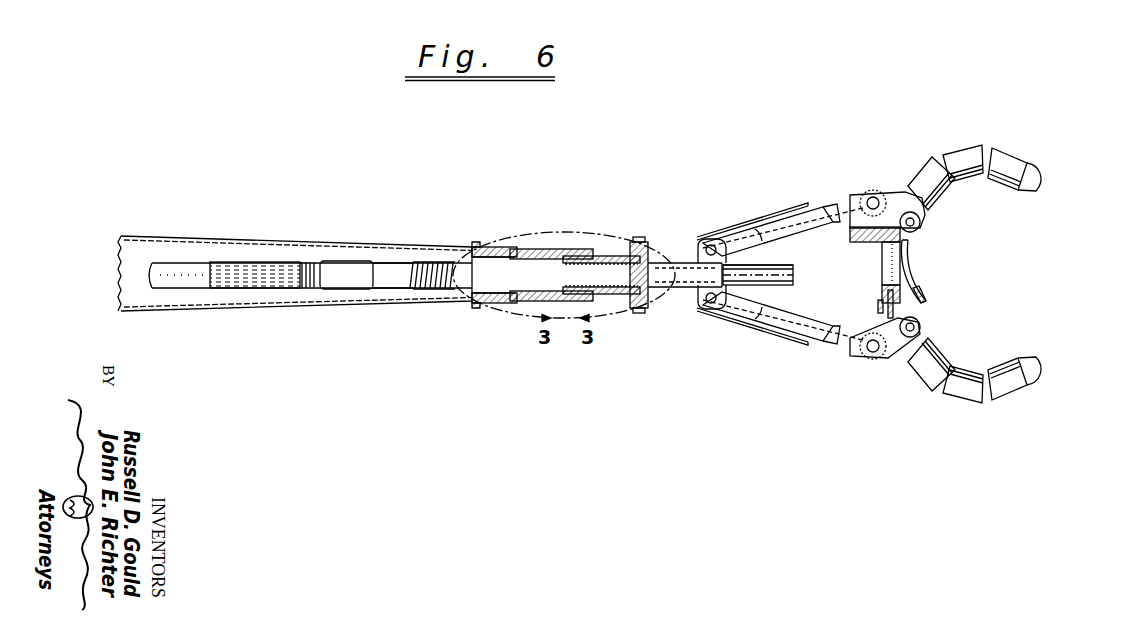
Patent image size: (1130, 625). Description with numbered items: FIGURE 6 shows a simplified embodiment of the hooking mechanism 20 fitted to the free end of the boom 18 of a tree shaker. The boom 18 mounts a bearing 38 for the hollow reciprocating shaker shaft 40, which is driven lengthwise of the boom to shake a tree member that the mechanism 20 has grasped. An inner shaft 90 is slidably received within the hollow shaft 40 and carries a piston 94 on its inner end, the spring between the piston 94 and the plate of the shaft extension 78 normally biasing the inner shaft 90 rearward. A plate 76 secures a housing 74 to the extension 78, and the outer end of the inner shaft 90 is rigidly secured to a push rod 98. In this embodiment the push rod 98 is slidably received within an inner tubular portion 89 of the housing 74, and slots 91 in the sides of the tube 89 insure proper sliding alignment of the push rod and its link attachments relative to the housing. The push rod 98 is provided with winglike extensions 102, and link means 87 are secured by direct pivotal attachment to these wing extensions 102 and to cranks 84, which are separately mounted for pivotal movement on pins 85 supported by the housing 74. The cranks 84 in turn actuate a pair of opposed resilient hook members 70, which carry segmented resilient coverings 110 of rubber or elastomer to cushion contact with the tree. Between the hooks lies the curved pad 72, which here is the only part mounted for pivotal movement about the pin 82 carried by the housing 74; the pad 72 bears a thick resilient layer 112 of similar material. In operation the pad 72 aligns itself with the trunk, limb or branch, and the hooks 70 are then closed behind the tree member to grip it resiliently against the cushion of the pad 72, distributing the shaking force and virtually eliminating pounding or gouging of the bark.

The boom 18 is at (302, 243).
The hooking mechanism 20 is at (889, 100).
The bearing 38 is at (570, 250).
The reciprocating shaker shaft 40 is at (176, 262).
The hook member 70 is at (1037, 187).
The curved pad 72 is at (921, 262).
The housing 74 is at (790, 211).
The plate 76 is at (640, 250).
The extension 78 is at (614, 257).
The pin 82 is at (886, 300).
The crank 84 is at (893, 195).
The pin 85 is at (916, 219).
The link means 87 is at (855, 199).
The inner tubular portion 89 is at (780, 276).
The inner shaft 90 is at (484, 272).
The slot 91 is at (778, 264).
The piston 94 is at (397, 268).
The push rod 98 is at (680, 268).
The winglike extension 102 is at (706, 242).
The segmented resilient covering 110 is at (967, 150).
The resilient layer 112 is at (922, 298).